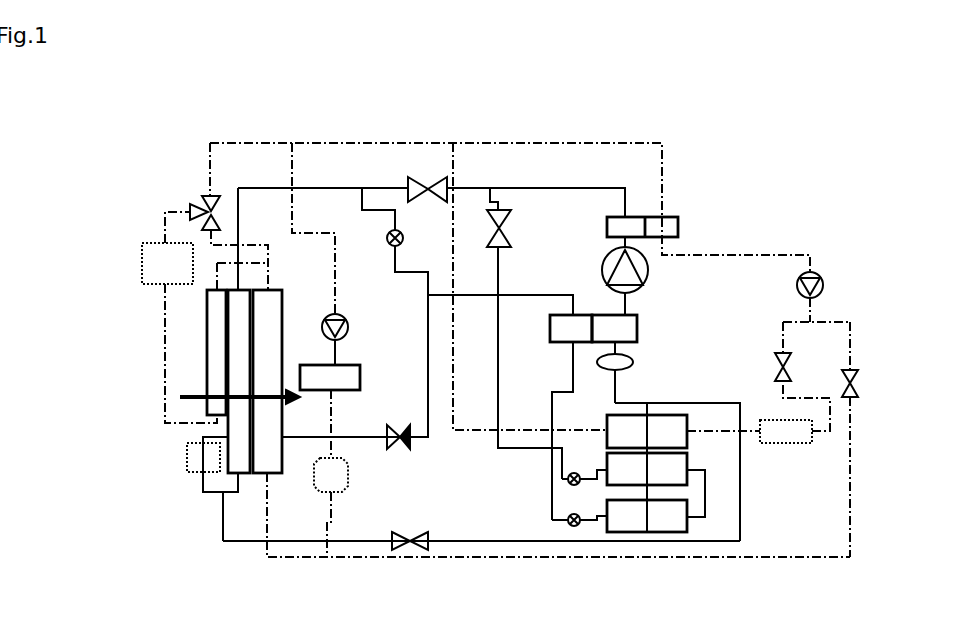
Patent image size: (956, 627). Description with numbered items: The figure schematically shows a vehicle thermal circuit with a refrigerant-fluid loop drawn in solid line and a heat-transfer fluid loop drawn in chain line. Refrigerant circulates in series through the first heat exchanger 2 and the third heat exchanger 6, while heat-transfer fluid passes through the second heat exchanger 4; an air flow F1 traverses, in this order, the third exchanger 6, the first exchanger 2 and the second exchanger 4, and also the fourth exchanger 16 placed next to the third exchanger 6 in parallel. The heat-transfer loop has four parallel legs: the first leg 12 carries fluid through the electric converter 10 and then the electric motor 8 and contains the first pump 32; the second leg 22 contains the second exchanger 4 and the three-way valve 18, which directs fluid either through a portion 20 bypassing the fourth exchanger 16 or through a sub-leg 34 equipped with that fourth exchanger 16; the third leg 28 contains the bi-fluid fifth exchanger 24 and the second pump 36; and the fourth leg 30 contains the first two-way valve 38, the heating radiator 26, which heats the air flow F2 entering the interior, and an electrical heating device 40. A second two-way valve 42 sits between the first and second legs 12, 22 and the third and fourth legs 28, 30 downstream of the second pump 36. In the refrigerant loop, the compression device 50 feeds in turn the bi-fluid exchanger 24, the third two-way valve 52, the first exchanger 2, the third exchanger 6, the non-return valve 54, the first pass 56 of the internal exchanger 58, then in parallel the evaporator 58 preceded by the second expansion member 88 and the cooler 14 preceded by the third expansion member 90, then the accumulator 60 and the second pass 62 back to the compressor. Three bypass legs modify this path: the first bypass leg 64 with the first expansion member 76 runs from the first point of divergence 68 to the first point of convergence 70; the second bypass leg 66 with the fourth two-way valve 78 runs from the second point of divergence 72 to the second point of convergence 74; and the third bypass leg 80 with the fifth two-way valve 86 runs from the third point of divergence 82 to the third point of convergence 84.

The first heat exchanger 2 is at (243, 372).
The second heat exchanger 4 is at (275, 302).
The third heat exchanger 6 is at (195, 455).
The electric motor 8 is at (358, 478).
The electric converter 10 is at (372, 362).
The first leg 12 is at (340, 258).
The cooler 14 is at (630, 515).
The fourth exchanger 16 is at (210, 312).
The three-way valve 18 is at (197, 200).
The portion 20 is at (258, 238).
The second leg 22 is at (267, 510).
The fifth exchanger 24 is at (648, 212).
The heating radiator 26 is at (668, 420).
The third leg 28 is at (798, 253).
The fourth leg 30 is at (458, 395).
The first pump 32 is at (350, 312).
The sub-leg 34 is at (165, 378).
The second pump 36 is at (826, 282).
The first two-way valve 38 is at (775, 367).
The electrical heating device 40 is at (790, 447).
The second two-way valve 42 is at (860, 383).
The compression device 50 is at (600, 271).
The third two-way valve 52 is at (428, 175).
The non-return valve 54 is at (400, 425).
The first pass 56 is at (560, 325).
The evaporator 58 is at (588, 305).
The accumulator 60 is at (635, 360).
The second pass 62 is at (630, 330).
The first bypass leg 64 is at (415, 270).
The second bypass leg 66 is at (498, 440).
The first point of divergence 68 is at (360, 188).
The first point of convergence 70 is at (430, 296).
The second point of divergence 72 is at (490, 198).
The second point of convergence 74 is at (552, 450).
The first expansion member 76 is at (403, 222).
The fourth two-way valve 78 is at (515, 228).
The third bypass leg 80 is at (463, 541).
The third point of divergence 82 is at (223, 497).
The third point of convergence 84 is at (746, 470).
The fifth two-way valve 86 is at (405, 545).
The second expansion member 88 is at (576, 472).
The third expansion member 90 is at (574, 527).
The air flow F1 is at (197, 395).
The air flow F2 is at (647, 420).